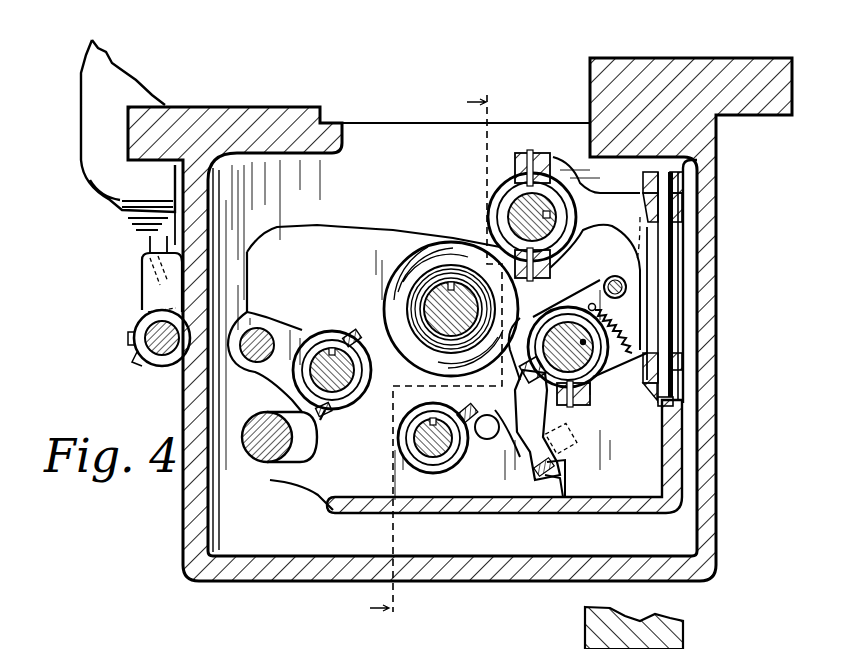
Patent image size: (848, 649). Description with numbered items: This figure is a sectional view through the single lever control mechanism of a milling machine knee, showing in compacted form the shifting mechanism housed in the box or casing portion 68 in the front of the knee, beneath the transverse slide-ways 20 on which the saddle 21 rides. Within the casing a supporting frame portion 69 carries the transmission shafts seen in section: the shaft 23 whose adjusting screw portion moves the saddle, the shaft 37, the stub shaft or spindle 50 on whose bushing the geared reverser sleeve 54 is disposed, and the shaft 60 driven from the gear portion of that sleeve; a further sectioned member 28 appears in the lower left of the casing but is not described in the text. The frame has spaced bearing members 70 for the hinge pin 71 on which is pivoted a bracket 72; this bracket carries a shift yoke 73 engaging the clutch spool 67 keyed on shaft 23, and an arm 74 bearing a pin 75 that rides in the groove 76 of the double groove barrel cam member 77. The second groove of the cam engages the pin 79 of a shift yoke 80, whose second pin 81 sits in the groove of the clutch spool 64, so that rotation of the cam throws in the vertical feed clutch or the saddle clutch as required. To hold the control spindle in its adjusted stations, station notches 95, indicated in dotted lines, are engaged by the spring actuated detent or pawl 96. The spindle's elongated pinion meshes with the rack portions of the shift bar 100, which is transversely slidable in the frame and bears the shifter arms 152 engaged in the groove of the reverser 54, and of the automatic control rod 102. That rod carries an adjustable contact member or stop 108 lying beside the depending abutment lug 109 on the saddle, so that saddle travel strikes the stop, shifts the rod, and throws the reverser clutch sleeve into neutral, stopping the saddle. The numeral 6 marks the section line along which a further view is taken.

The section line 6- 6 is at (436, 354).
The transverse slide-ways 20 is at (208, 105).
The saddle 21 is at (112, 85).
The shaft 23 is at (507, 190).
The roller 28 is at (262, 447).
The shaft 37 is at (436, 300).
The stub shaft or spindle 50 is at (320, 360).
The geared reverser sleeve 54 is at (245, 360).
The shaft 60 is at (436, 473).
The clutch spool 64 is at (395, 458).
The clutch spool member 67 is at (492, 203).
The box or casing portion 68 is at (290, 478).
The supporting frame portion 69 is at (673, 492).
The bearing members 70 is at (650, 400).
The hinge pin 71 is at (688, 165).
The bracket 72 is at (613, 197).
The shift yoke 73 is at (530, 157).
The arm 74 is at (600, 405).
The pin 75 is at (587, 405).
The groove 76 is at (613, 420).
The double groove barrel cam member 77 is at (578, 342).
The pin 79 is at (505, 420).
The shift yoke 80 is at (548, 480).
The pin 81 is at (483, 445).
The station notches 95 is at (520, 318).
The spring actuated detent or pawl 96 is at (594, 272).
The shift bar 100 is at (298, 367).
The automatic control rod 102 is at (150, 334).
The adjustable contact member or stop 108 is at (152, 279).
The depending abutment lug 109 is at (150, 250).
The shifter arms 152 is at (273, 330).